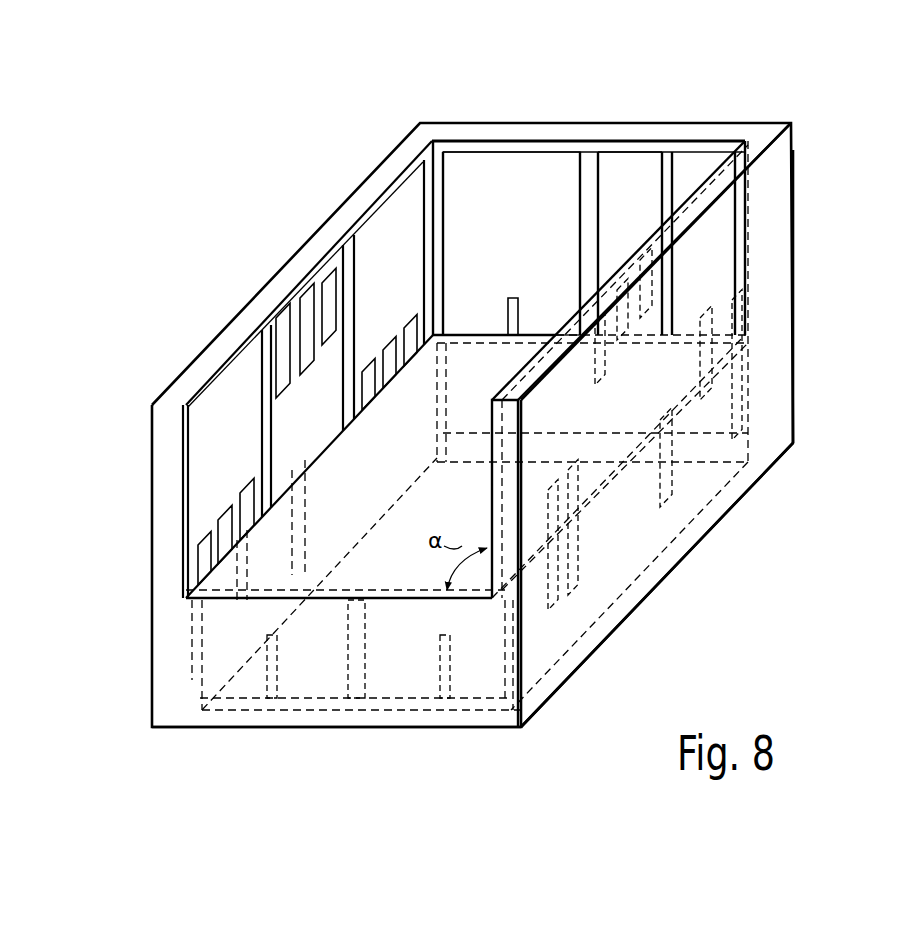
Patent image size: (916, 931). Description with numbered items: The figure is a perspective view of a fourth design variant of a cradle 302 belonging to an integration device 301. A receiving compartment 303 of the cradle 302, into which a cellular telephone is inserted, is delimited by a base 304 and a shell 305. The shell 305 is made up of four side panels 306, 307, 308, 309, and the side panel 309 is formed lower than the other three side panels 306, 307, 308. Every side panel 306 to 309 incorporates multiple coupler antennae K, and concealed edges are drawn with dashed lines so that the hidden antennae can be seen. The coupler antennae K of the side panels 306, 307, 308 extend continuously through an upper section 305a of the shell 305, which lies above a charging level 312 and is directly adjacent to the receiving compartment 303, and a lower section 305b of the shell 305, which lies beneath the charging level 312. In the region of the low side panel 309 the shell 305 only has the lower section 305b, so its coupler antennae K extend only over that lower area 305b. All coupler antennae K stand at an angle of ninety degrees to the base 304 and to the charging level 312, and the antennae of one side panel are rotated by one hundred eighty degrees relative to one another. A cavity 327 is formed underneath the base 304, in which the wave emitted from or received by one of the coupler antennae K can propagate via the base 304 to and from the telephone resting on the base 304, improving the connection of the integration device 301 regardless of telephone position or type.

The integration device 301 is at (718, 89).
The cradle 302 is at (772, 97).
The receiving compartment 303 is at (502, 197).
The base 304 is at (493, 360).
The shell 305 is at (777, 274).
The upper section of the shell 305a is at (777, 205).
The lower section of the shell 305b is at (780, 330).
The side panel 306 is at (683, 545).
The side panel 307 is at (659, 128).
The side panel 308 is at (403, 160).
The side panel 309 is at (232, 718).
The charging level 312 is at (462, 360).
The cavity 327 is at (500, 740).
The coupler antennae K is at (497, 150).